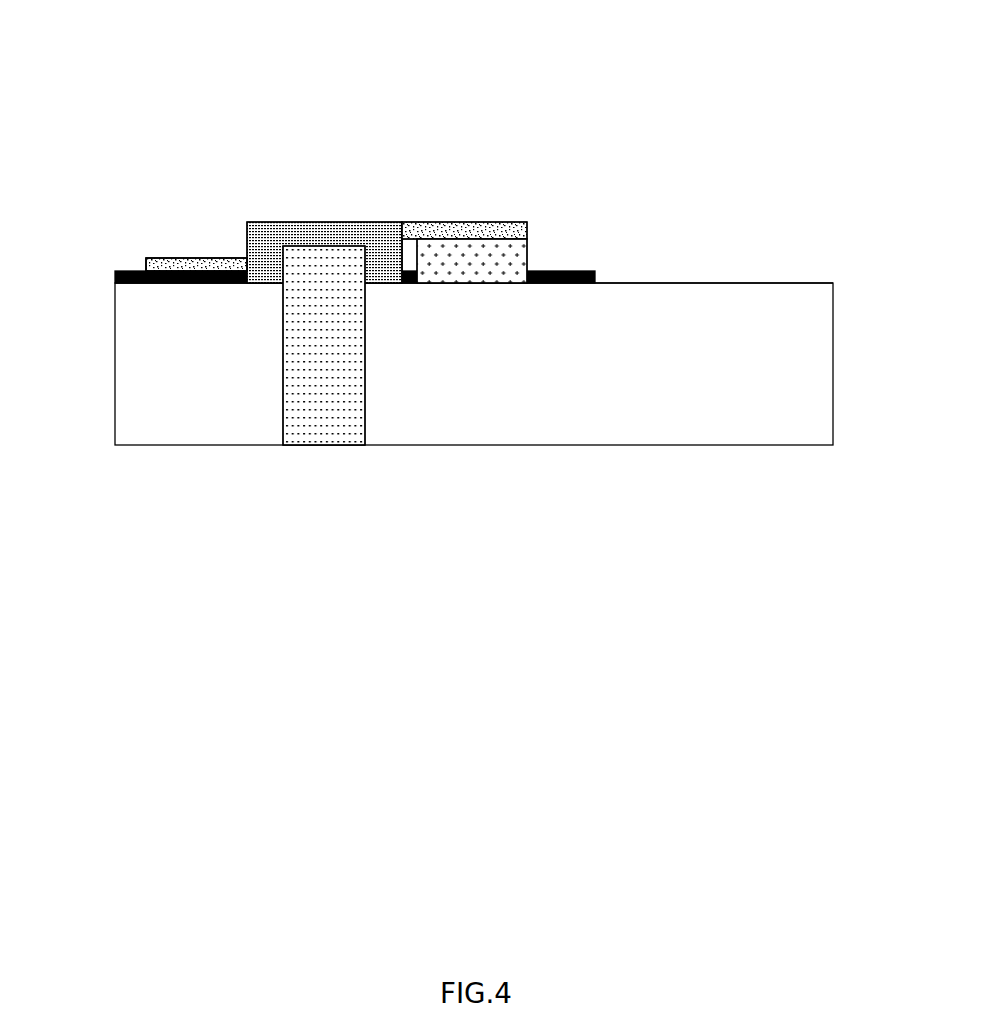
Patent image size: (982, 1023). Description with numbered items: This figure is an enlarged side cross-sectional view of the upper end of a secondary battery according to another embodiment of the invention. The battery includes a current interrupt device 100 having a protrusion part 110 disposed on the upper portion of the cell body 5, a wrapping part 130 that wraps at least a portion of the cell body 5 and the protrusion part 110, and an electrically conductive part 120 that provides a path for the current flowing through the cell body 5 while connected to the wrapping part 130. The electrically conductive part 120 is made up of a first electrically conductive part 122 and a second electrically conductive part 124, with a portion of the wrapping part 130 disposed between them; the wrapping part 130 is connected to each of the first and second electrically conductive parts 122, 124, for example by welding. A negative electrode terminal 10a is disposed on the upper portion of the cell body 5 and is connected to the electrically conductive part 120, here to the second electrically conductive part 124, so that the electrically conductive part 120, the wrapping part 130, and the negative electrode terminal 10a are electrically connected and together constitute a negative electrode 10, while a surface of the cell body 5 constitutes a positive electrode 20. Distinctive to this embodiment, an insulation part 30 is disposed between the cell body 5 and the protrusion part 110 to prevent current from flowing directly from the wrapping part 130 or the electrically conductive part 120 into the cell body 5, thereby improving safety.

The cell body 5 is at (820, 363).
The negative electrode 10 is at (155, 244).
The negative electrode terminal 10a is at (515, 250).
The positive electrode 20 is at (733, 283).
The insulation part 30 is at (115, 276).
The current interrupt device 100 is at (303, 216).
The protrusion part 110 is at (383, 233).
The electrically conductive part 120 is at (465, 73).
The first electrically conductive part 122 is at (196, 258).
The second electrically conductive part 124 is at (462, 221).
The wrapping part 130 is at (323, 433).